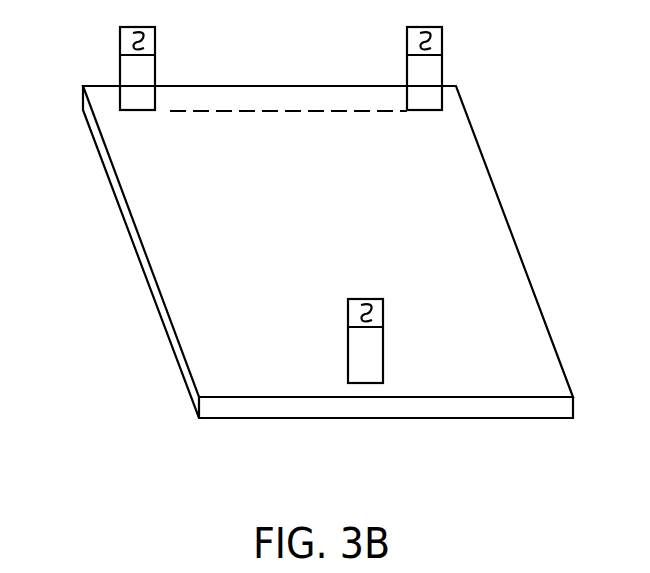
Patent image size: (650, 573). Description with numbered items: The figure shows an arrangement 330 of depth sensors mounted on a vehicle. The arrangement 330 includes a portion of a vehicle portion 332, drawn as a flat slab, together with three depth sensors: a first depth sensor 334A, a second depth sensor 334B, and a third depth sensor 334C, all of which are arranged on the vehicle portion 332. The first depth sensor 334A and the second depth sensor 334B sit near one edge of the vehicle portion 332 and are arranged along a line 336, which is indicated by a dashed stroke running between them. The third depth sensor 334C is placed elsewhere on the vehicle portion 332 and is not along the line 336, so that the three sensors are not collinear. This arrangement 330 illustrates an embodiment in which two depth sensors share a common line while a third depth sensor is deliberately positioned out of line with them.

The arrangement 330 is at (612, 40).
The vehicle portion 332 is at (386, 417).
The first depth sensor 334A is at (120, 72).
The second depth sensor 334B is at (407, 72).
The third depth sensor 334C is at (348, 354).
The line 336 is at (282, 111).